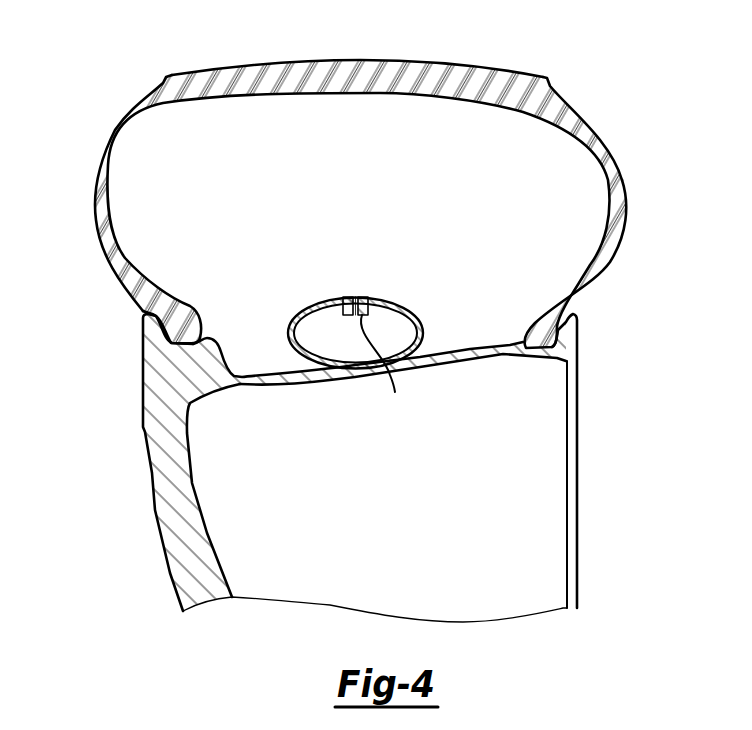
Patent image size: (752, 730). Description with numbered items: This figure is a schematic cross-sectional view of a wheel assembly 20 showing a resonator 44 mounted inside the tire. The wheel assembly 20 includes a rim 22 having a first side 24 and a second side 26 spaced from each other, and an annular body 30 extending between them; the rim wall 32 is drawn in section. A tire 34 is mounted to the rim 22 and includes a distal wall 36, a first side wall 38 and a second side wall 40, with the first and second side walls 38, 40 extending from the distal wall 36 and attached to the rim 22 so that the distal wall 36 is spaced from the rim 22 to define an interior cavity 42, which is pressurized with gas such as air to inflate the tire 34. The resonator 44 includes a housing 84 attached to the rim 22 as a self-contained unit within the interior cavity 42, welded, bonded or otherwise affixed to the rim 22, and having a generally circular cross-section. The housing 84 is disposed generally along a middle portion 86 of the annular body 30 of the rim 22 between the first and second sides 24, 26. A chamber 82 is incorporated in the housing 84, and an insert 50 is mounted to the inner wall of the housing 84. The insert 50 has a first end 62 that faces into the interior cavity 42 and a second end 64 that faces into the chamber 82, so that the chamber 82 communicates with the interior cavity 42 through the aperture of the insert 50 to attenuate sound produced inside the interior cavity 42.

The wheel assembly 20 is at (122, 97).
The rim 22 is at (545, 542).
The first side 24 is at (152, 474).
The second side 26 is at (578, 516).
The annular body 30 is at (260, 378).
The rim wall 32 is at (165, 507).
The tire 34 is at (548, 84).
The distal wall 36 is at (460, 62).
The first side wall 38 is at (98, 242).
The second side wall 40 is at (626, 217).
The interior cavity 42 is at (568, 181).
The resonator 44 is at (382, 292).
The insert 50 is at (348, 298).
The first end 62 is at (367, 298).
The second end 64 is at (382, 369).
The chamber 82 is at (313, 328).
The housing 84 is at (423, 336).
The middle portion 86 is at (357, 388).